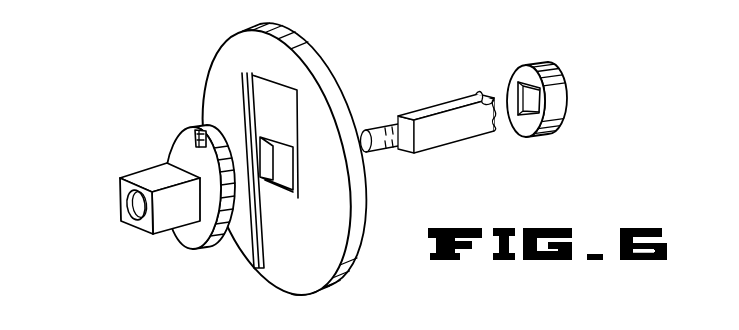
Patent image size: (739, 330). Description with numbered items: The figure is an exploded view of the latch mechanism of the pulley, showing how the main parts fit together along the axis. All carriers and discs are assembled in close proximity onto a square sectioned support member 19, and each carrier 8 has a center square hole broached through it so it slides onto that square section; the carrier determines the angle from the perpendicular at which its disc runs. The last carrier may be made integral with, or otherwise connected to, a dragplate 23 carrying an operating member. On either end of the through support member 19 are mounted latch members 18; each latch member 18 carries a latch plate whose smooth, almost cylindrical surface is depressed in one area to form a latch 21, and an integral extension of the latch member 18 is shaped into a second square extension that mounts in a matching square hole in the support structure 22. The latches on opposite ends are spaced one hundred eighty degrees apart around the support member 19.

The carrier 8 is at (530, 77).
The latch member 18 is at (141, 170).
The support member 19 is at (412, 113).
The latch 21 is at (208, 131).
The support structure 22 is at (157, 193).
The dragplate 23 is at (273, 61).